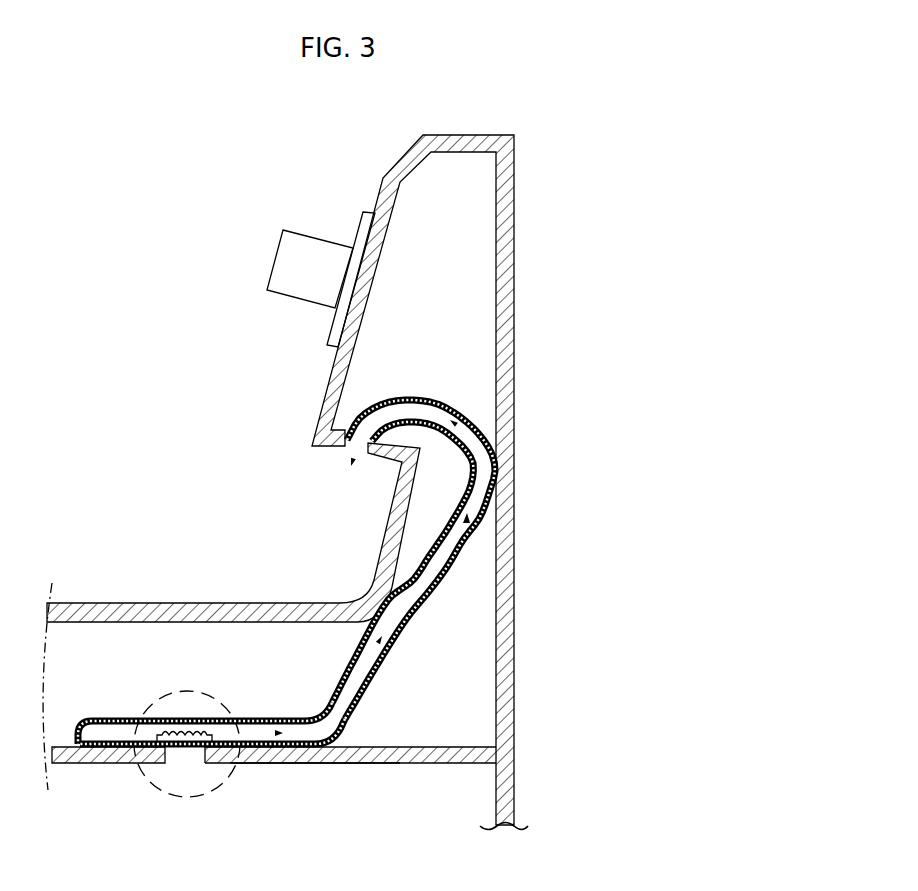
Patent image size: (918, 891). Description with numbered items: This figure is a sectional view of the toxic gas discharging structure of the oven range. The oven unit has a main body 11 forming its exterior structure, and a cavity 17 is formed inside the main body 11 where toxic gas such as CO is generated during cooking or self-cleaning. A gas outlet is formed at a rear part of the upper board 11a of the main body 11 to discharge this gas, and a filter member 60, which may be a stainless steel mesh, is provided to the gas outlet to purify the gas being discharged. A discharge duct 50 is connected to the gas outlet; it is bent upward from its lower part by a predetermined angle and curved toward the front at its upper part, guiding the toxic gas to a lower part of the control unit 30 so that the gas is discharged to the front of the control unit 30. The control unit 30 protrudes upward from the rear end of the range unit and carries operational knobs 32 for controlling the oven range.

The control unit 30 is at (516, 184).
The operational knobs 32 is at (290, 242).
The discharge duct 50 is at (435, 586).
The main body 11 is at (505, 798).
The upper board 11a is at (310, 764).
The cavity 17 is at (418, 823).
The filter member 60 is at (185, 738).